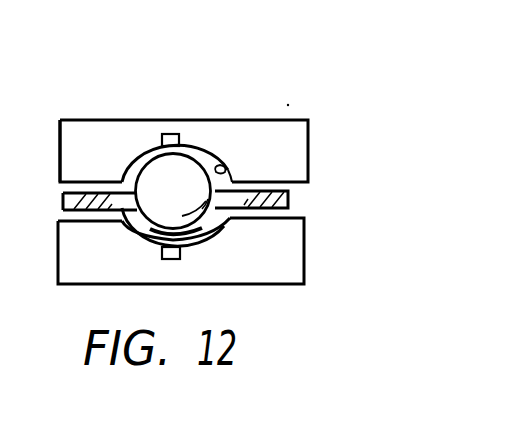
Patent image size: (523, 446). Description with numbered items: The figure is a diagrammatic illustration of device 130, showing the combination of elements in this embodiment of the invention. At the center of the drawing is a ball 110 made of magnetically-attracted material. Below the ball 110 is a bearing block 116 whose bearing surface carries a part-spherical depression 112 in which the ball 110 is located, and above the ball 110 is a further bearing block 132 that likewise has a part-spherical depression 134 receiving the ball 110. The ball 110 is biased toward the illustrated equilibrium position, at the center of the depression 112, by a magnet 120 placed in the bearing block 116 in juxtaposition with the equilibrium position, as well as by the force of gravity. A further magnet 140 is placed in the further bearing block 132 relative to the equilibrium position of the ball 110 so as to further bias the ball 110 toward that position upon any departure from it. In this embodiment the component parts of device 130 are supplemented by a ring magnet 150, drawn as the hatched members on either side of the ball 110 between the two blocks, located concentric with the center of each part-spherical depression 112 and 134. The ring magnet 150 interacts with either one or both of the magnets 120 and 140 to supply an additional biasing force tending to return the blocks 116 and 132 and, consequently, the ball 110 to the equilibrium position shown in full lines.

The device 130 is at (61, 120).
The further bearing block 132 is at (300, 164).
The bearing block 116 is at (294, 248).
The part-spherical depression 134 is at (227, 168).
The part-spherical depression 112 is at (213, 229).
The ball 110 is at (184, 197).
The ring magnet 150 is at (280, 200).
The further magnet 140 is at (161, 139).
The magnet 120 is at (161, 252).